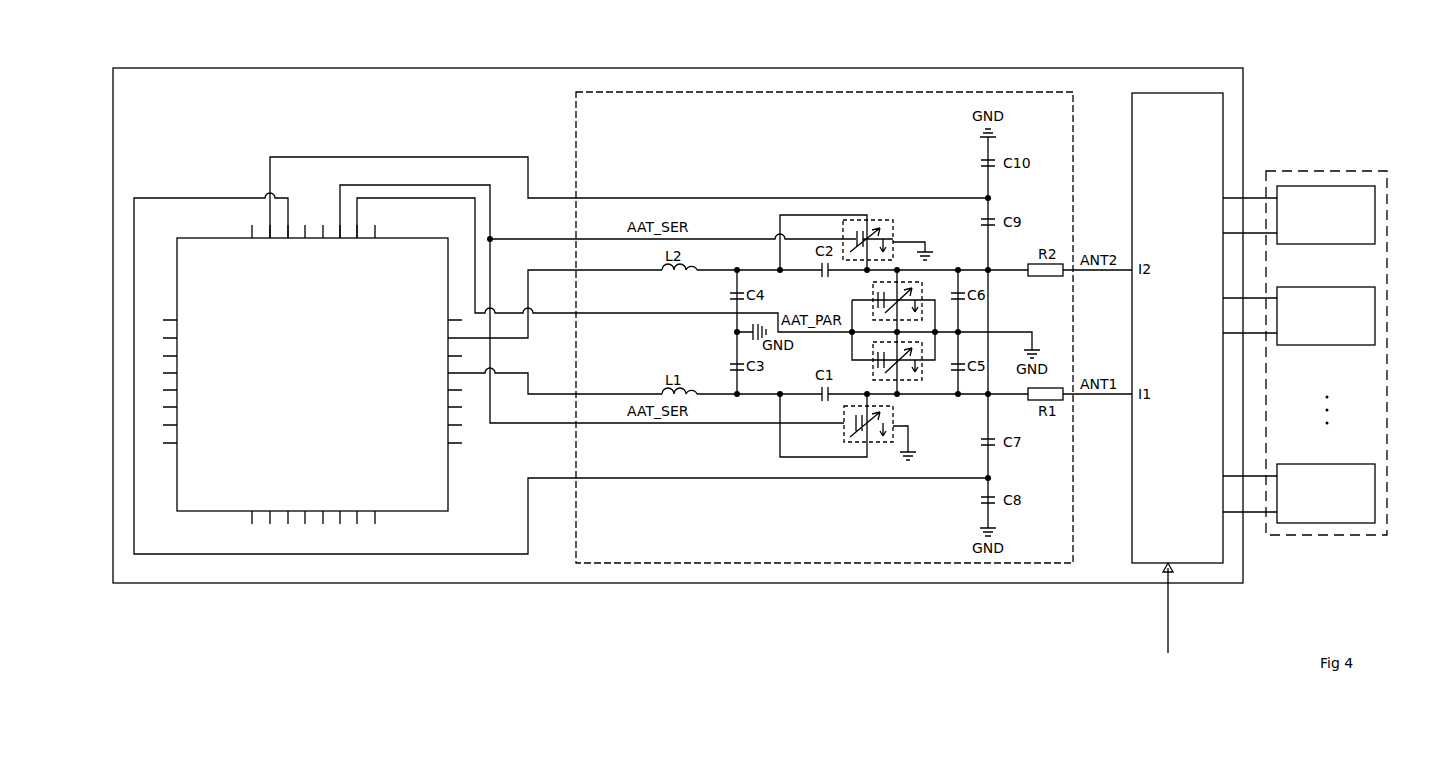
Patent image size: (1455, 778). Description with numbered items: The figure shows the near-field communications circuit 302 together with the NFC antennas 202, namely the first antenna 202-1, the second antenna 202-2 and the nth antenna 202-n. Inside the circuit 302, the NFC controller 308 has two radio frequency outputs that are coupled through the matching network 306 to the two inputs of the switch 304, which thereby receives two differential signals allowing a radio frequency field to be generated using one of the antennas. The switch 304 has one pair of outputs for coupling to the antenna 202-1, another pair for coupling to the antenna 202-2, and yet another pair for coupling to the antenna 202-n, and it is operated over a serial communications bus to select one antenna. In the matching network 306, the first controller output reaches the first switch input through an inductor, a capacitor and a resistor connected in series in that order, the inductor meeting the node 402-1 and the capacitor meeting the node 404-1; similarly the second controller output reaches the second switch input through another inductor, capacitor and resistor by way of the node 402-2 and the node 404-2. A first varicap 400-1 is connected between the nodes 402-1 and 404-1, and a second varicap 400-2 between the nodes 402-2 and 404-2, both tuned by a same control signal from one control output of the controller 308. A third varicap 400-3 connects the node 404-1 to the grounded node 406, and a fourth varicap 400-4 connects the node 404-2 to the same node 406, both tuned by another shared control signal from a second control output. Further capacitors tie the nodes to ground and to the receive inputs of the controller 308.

The near-field communications circuit 302 is at (1020, 68).
The switch 304 is at (1173, 93).
The matching network 306 is at (843, 92).
The NFC controller 308 is at (420, 513).
The NFC antennas 202 is at (1320, 171).
The antenna 1 202-1 is at (1375, 217).
The antenna 2 202-2 is at (1375, 305).
The antenna n 202-n is at (1375, 487).
The first varicap 400-1 is at (893, 418).
The second varicap 400-2 is at (893, 234).
The third varicap 400-3 is at (873, 372).
The fourth varicap 400-4 is at (873, 288).
The node 402-1 is at (736, 392).
The node 402-2 is at (737, 267).
The node 404-1 is at (988, 391).
The node 404-2 is at (990, 274).
The node 406 is at (895, 334).